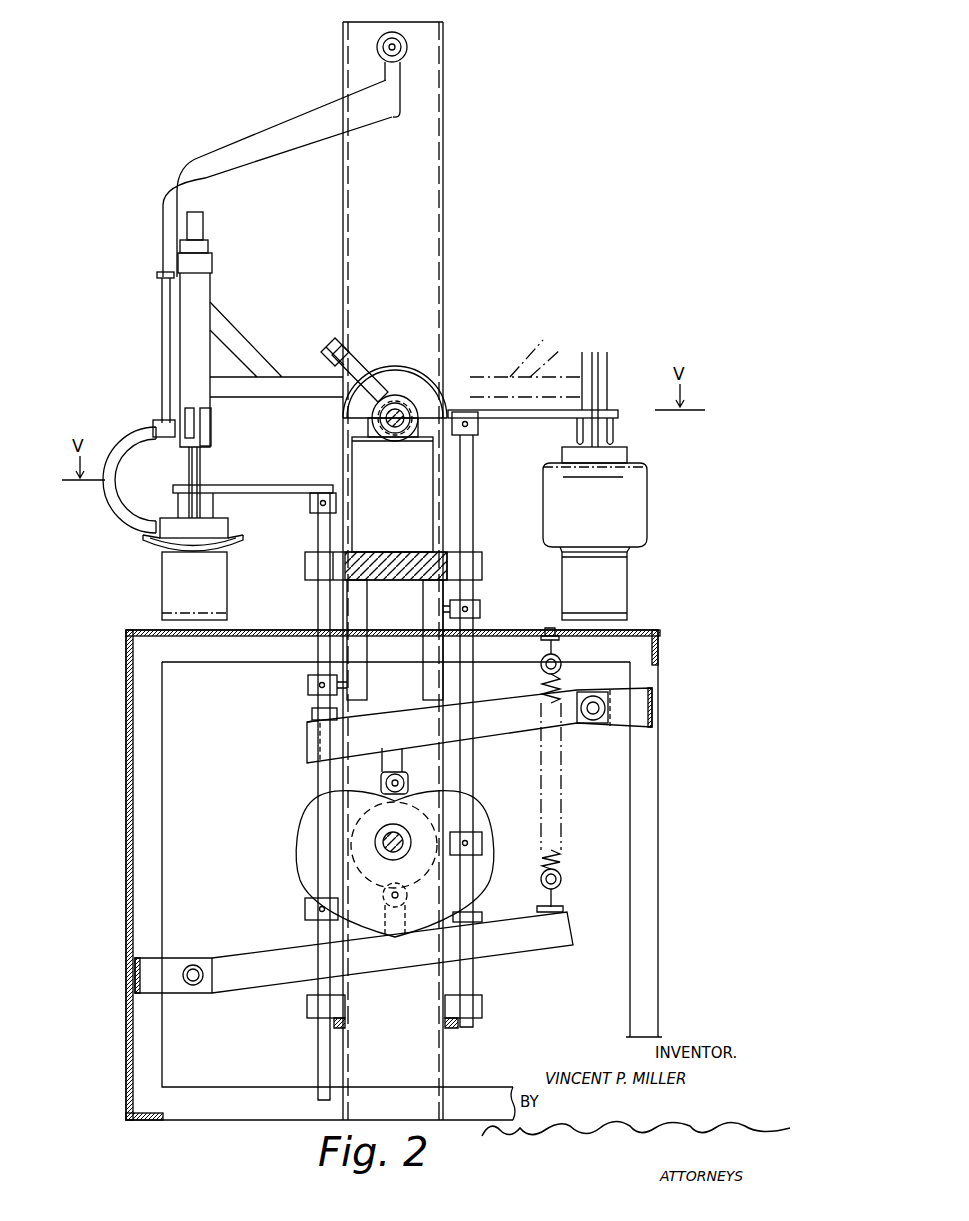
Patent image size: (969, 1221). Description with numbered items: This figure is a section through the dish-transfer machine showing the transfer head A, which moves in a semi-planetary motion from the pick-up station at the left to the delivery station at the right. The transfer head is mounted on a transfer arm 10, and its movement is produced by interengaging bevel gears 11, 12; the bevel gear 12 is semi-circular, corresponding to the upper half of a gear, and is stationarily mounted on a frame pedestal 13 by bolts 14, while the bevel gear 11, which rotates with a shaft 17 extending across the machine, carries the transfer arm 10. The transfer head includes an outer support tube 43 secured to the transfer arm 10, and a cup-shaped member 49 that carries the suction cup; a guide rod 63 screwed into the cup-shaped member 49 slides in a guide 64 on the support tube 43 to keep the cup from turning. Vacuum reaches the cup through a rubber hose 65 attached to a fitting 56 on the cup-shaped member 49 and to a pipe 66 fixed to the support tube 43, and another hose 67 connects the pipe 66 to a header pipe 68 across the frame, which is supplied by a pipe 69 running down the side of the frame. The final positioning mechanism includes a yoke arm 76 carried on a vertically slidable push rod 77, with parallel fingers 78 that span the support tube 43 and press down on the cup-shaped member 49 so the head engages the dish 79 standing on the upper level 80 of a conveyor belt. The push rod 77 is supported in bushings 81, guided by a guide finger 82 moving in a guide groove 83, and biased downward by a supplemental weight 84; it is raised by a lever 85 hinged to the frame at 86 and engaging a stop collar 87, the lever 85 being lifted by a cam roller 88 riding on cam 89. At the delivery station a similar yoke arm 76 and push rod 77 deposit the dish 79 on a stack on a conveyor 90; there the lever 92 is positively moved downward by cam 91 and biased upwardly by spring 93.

The header pipe 68 is at (406, 45).
The pipe 69 is at (402, 107).
The hose 67 is at (222, 160).
The transfer head A is at (215, 297).
The outer support tube 43 is at (182, 300).
The pipe 66 is at (163, 335).
The rubber hose 65 is at (136, 438).
The transfer arm 10 is at (250, 346).
The guide rod 63 is at (196, 414).
The guide 64 is at (212, 427).
The bevel gear 11 is at (372, 372).
The bevel gear 12 is at (412, 386).
The bolts 14 is at (420, 402).
The shaft 17 is at (395, 428).
The frame pedestal 13 is at (354, 458).
The yoke arm 76 is at (268, 486).
The fingers 78 is at (212, 503).
The push rod 77 is at (318, 530).
The fitting 56 is at (162, 518).
The cup-shaped member 49 is at (226, 528).
The dish 79 is at (150, 545).
The upper level of conveyor belt 80 is at (185, 562).
The bushings 81 is at (305, 572).
The guide groove 83 is at (370, 615).
The guide finger 82 is at (480, 609).
The stop collar 87 is at (312, 715).
The cam 91 is at (430, 757).
The hinge 86 is at (593, 720).
The lever 85 is at (522, 688).
The spring 93 is at (560, 866).
The cam roller 88 is at (382, 783).
The cam 89 is at (300, 830).
The supplemental weight 84 is at (482, 843).
The lever 92 is at (505, 947).
The conveyor 90 is at (612, 590).